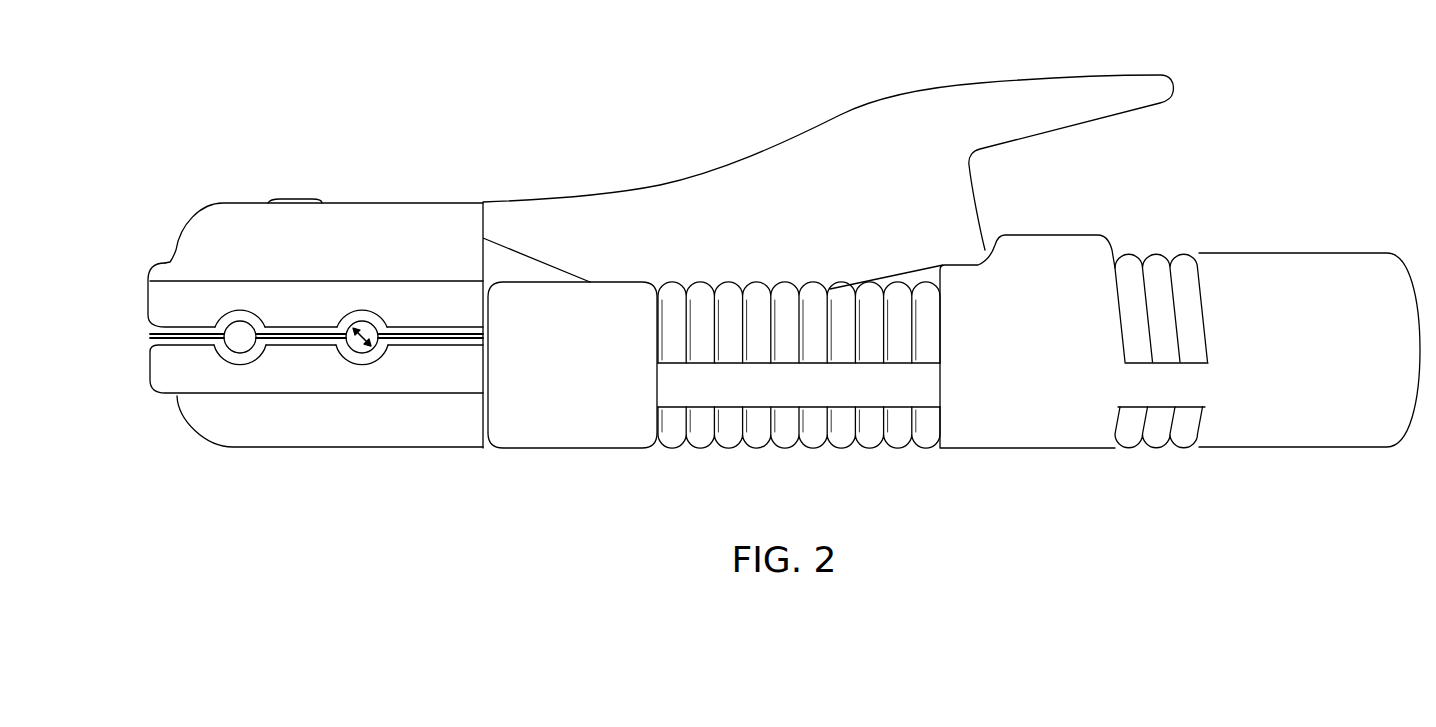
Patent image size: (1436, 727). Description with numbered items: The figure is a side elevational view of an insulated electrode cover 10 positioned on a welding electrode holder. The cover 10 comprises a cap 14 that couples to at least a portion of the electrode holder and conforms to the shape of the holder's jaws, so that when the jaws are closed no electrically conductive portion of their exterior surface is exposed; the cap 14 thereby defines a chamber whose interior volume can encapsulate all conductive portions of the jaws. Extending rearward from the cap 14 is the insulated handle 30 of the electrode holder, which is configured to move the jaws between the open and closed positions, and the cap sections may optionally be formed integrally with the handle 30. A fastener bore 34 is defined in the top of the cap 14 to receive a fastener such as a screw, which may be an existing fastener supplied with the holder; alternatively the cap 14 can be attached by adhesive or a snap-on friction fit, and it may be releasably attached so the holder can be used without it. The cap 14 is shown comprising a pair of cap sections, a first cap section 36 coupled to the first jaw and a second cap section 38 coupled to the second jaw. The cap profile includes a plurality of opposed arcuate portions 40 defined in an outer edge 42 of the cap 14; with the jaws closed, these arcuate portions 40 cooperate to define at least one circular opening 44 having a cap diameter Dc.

The insulated electrode cover 10 is at (283, 93).
The cap 14 is at (287, 290).
The insulated handle 30 is at (903, 110).
The fastener bore 34 is at (291, 200).
The first cap section 36 is at (393, 288).
The second cap section 38 is at (476, 436).
The arcuate portions 40 is at (243, 343).
The outer edge 42 is at (455, 333).
The circular opening 44 is at (236, 322).
The cap diameter Dc is at (362, 345).